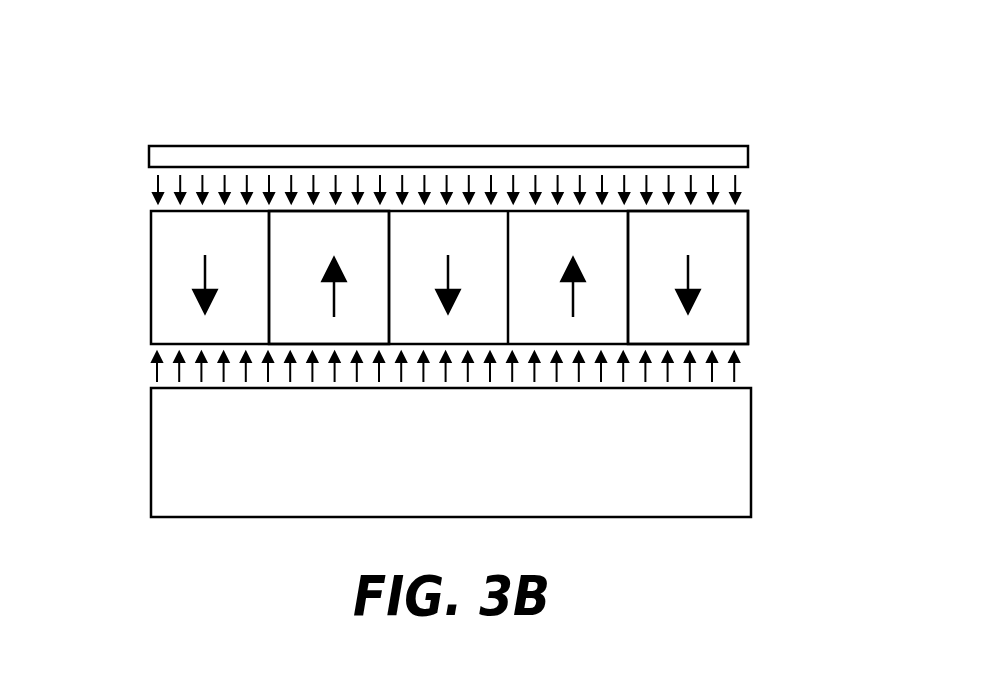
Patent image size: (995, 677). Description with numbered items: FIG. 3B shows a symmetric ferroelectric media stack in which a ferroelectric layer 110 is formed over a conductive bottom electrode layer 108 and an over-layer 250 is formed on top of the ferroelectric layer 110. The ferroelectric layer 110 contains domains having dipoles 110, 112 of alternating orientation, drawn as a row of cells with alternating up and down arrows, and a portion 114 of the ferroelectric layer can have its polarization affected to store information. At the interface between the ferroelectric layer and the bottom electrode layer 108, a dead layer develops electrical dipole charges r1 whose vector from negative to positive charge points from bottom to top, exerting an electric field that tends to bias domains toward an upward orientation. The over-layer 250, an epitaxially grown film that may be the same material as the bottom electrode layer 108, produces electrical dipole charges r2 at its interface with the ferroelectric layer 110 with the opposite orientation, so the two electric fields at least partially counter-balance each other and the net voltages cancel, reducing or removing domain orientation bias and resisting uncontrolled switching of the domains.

The bottom electrode layer 108 is at (472, 476).
The ferroelectric layer 110 is at (151, 271).
The dipole 112 is at (307, 220).
The portion of the ferroelectric layer 114 is at (733, 257).
The over-layer 250 is at (523, 155).
The electrical dipole charges at the ferroelectric layer and bottom electrode interf r1 is at (124, 372).
The electrical dipole charges at the ferroelectric layer and over-layer interface r2 is at (128, 181).